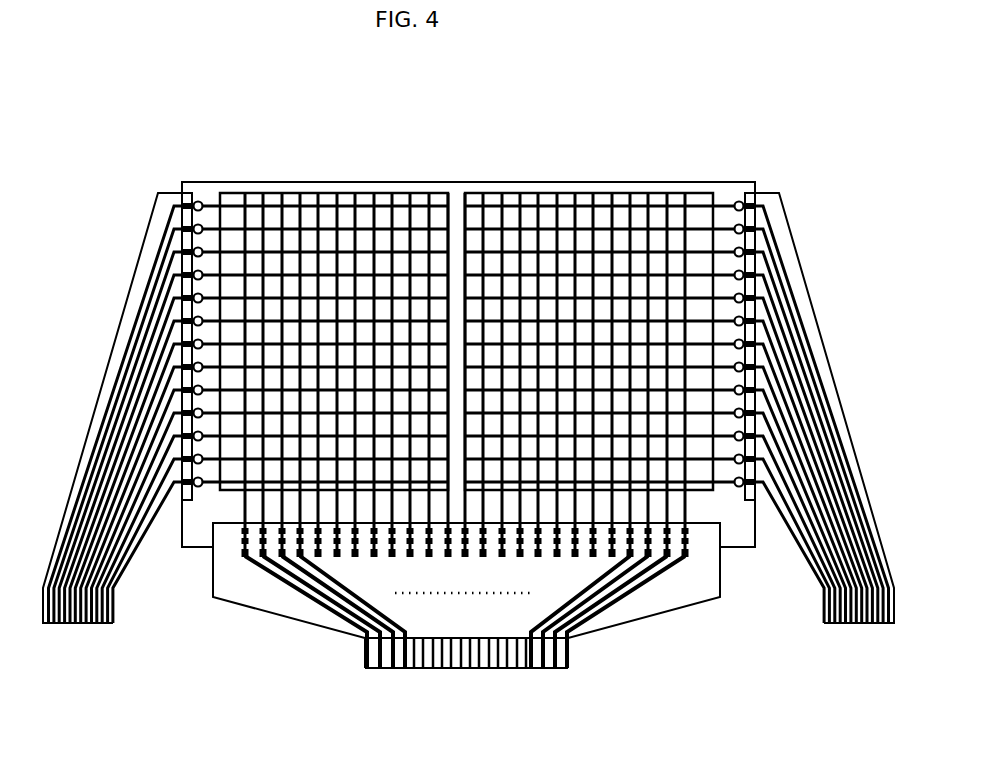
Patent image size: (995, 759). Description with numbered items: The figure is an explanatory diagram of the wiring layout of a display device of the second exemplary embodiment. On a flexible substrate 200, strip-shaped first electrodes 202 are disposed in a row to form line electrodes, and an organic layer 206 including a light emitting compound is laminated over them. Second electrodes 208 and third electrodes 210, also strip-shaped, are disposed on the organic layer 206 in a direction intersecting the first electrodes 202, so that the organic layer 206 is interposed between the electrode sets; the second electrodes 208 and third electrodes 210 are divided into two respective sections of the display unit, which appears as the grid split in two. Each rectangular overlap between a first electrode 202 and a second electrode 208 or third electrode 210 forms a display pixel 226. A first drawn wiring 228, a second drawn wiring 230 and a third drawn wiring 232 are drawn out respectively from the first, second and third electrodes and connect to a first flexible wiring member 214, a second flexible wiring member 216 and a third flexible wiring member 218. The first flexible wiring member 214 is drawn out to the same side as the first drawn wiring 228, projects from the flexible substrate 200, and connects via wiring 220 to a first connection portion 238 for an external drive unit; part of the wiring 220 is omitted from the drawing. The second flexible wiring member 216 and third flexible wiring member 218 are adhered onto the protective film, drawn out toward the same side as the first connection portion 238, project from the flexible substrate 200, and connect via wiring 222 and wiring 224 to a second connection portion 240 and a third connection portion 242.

The flexible substrate 200 is at (604, 186).
The first electrodes 202 is at (255, 213).
The organic layer 206 is at (235, 218).
The second electrodes 208 is at (673, 455).
The third electrodes 210 is at (231, 462).
The first flexible wiring member 214 is at (627, 607).
The second flexible wiring member 216 is at (777, 530).
The third flexible wiring member 218 is at (107, 389).
The wiring 220 is at (392, 620).
The wiring 222 is at (798, 378).
The wiring 224 is at (160, 352).
The display pixel 226 is at (357, 232).
The first drawn wiring 228 is at (650, 517).
The second drawn wiring 230 is at (735, 203).
The third drawn wiring 232 is at (216, 205).
The first connection portion 238 is at (392, 620).
The second connection portion 240 is at (855, 623).
The third connection portion 242 is at (92, 623).